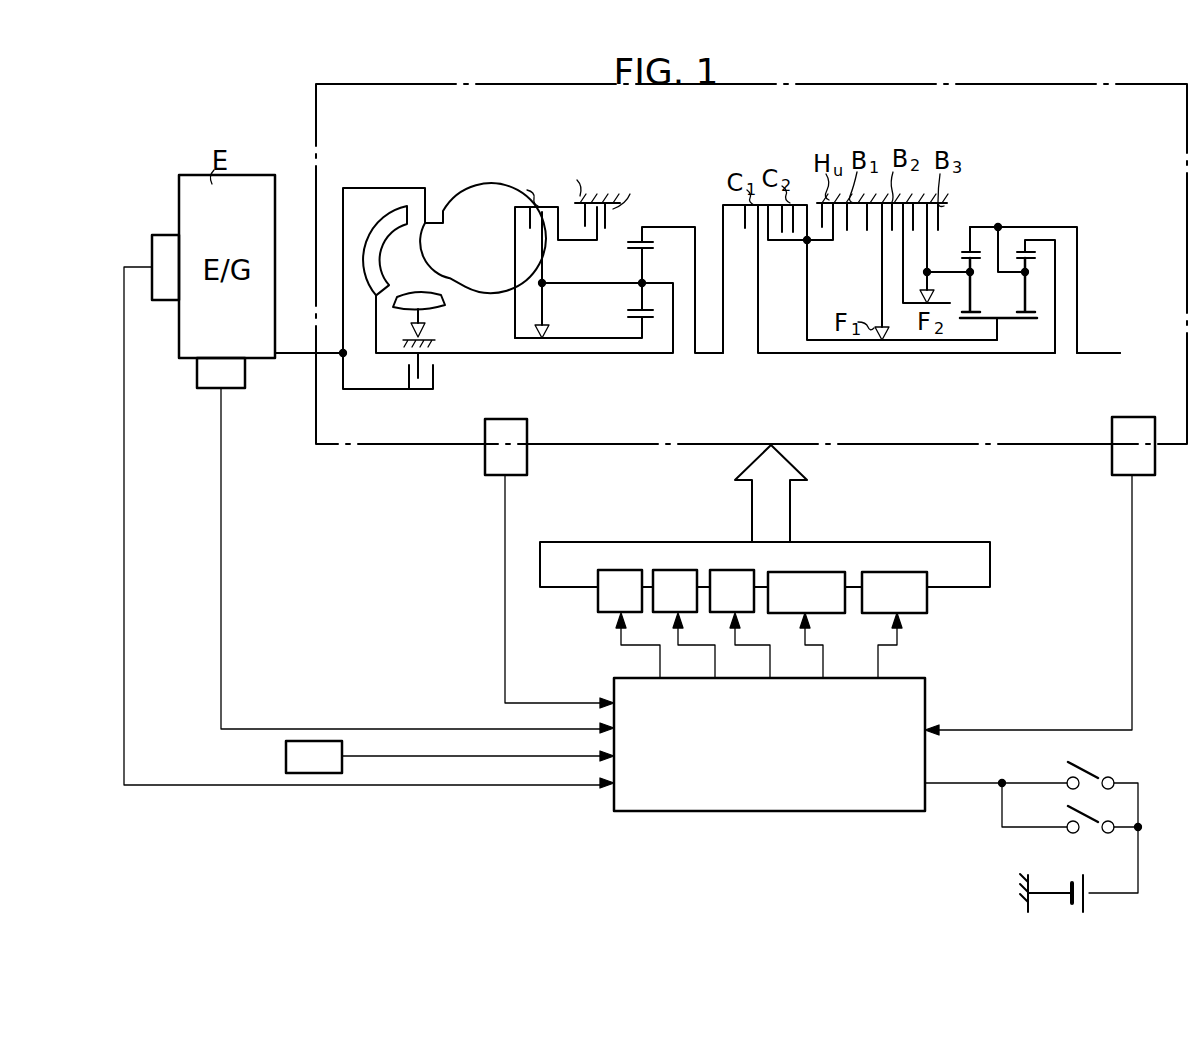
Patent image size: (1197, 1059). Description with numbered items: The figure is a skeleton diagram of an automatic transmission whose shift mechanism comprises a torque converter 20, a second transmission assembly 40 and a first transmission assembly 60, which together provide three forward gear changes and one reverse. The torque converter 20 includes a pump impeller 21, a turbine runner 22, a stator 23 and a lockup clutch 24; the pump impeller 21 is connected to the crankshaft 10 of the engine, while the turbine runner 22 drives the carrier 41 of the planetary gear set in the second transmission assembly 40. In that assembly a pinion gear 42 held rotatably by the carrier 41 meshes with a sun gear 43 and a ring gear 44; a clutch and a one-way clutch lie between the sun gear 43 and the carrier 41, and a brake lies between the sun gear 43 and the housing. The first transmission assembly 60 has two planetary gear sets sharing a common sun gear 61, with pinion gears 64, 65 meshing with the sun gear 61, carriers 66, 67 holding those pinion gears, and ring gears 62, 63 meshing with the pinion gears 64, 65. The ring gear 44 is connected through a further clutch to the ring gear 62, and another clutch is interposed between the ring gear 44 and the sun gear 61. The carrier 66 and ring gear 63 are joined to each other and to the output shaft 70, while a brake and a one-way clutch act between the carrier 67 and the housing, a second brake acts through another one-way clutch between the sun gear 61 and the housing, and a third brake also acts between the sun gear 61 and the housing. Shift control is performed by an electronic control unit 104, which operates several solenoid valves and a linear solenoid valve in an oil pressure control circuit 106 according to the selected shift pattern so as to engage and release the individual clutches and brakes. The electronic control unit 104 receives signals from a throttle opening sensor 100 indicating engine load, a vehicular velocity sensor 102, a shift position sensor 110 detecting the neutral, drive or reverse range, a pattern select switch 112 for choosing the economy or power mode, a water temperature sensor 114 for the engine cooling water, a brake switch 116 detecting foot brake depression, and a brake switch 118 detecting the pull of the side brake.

The crankshaft 10 is at (292, 360).
The torque converter 20 is at (387, 168).
The pump impeller 21 is at (441, 210).
The turbine runner 22 is at (380, 226).
The stator 23 is at (430, 297).
The lockup clutch 24 is at (373, 390).
The second transmission assembly 40 is at (618, 158).
The carrier 41 is at (655, 283).
The pinion gear 42 is at (630, 257).
The sun gear 43 is at (632, 318).
The ring gear 44 is at (634, 234).
The first transmission assembly 60 is at (1057, 172).
The sun gear 61 is at (1005, 320).
The ring gear 62 is at (1018, 247).
The ring gear 63 is at (963, 249).
The pinion gear 64 is at (1033, 266).
The pinion gear 65 is at (977, 262).
The carrier 66 is at (1010, 279).
The carrier 67 is at (948, 272).
The output shaft 70 is at (1100, 355).
The throttle opening sensor 100 is at (199, 381).
The vehicular velocity sensor 102 is at (1133, 424).
The electronic control unit 104 is at (760, 811).
The oil pressure control circuit 106 is at (990, 568).
The shift position sensor 110 is at (506, 424).
The pattern select switch 112 is at (286, 758).
The water temperature sensor 114 is at (158, 238).
The brake switch 116 is at (1098, 774).
The brake switch 118 is at (1089, 826).